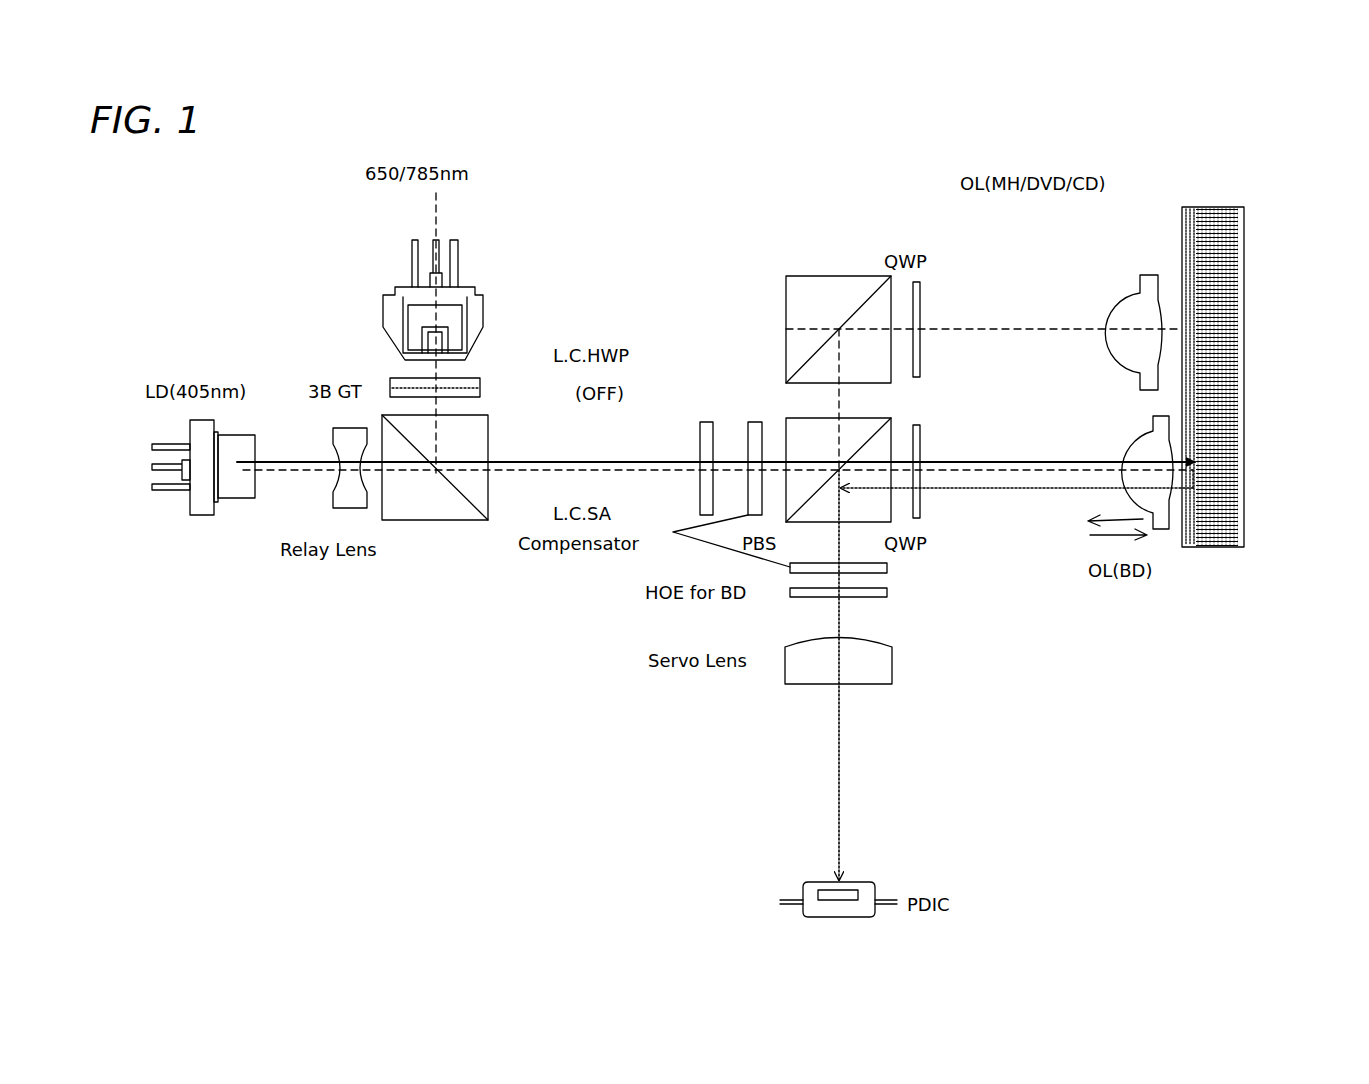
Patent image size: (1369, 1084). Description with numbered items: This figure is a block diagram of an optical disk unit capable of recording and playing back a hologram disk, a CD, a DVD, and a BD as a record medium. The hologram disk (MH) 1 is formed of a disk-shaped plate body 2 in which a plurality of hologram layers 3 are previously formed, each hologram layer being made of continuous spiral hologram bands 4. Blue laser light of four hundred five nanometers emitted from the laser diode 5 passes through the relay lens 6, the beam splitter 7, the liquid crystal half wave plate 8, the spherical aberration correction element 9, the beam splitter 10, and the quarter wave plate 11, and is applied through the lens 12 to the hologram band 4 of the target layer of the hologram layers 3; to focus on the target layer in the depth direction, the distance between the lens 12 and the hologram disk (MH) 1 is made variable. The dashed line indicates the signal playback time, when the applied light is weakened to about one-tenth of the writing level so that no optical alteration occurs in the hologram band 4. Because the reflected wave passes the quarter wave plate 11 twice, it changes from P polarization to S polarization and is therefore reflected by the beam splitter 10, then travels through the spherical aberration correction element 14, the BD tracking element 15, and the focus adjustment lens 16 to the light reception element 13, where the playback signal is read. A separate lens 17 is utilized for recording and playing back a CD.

The hologram disk (MH) 1 is at (1232, 207).
The plate body 2 is at (1232, 547).
The hologram layers 3 is at (1238, 241).
The hologram band 4 is at (1194, 207).
The laser diode 5 is at (200, 517).
The relay lens 6 is at (333, 492).
The beam splitter 7 is at (434, 522).
The liquid crystal half wave plate 8 is at (704, 421).
The spherical aberration correction element 9 is at (753, 421).
The beam splitter 10 is at (876, 418).
The quarter wave plate 11 is at (921, 507).
The lens 12 is at (1128, 444).
The light reception element 13 is at (876, 886).
The spherical aberration correction element 14 is at (887, 568).
The BD tracking element 15 is at (887, 593).
The focus adjustment lens 16 is at (892, 662).
The lens 17 is at (1114, 310).